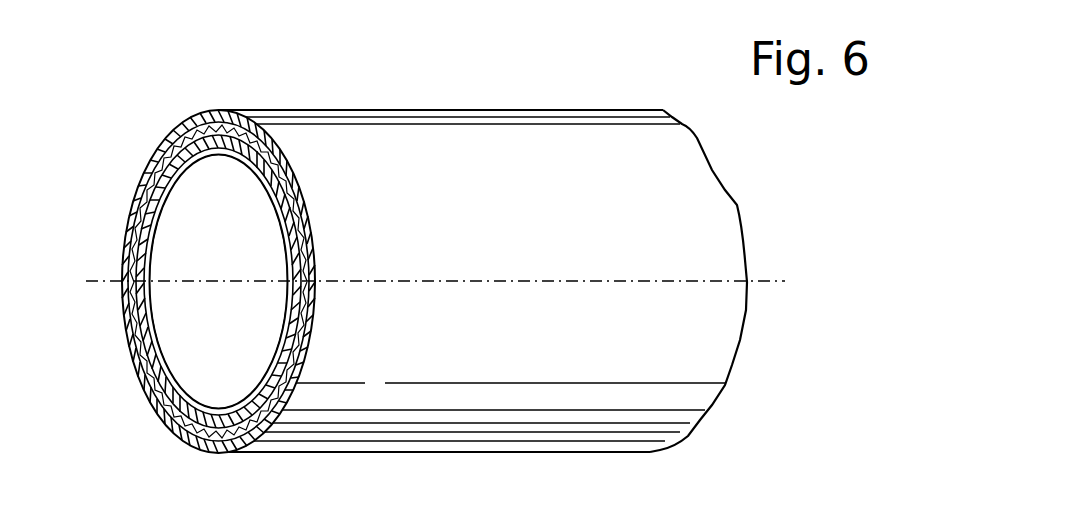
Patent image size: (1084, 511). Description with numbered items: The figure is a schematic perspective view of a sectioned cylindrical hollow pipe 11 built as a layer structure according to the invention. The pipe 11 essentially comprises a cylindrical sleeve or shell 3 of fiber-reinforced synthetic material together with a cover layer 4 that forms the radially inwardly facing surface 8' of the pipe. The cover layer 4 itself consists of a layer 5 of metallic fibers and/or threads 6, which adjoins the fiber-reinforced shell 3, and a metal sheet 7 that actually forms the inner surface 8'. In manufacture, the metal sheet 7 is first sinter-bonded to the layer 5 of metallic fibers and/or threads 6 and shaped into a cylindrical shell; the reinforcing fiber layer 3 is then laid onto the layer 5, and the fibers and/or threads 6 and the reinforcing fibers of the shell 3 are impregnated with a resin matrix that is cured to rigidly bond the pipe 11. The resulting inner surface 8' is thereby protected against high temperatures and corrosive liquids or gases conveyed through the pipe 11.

The cylindrical hollow pipe 11 is at (190, 86).
The cylindrical sleeve or shell 3 is at (175, 437).
The cover layer 4 is at (197, 386).
The layer of metallic fibers and/or threads 5 is at (130, 342).
The metallic fibers and/or threads 6 is at (124, 295).
The metal sheet 7 is at (124, 244).
The inner surface 8' is at (169, 282).